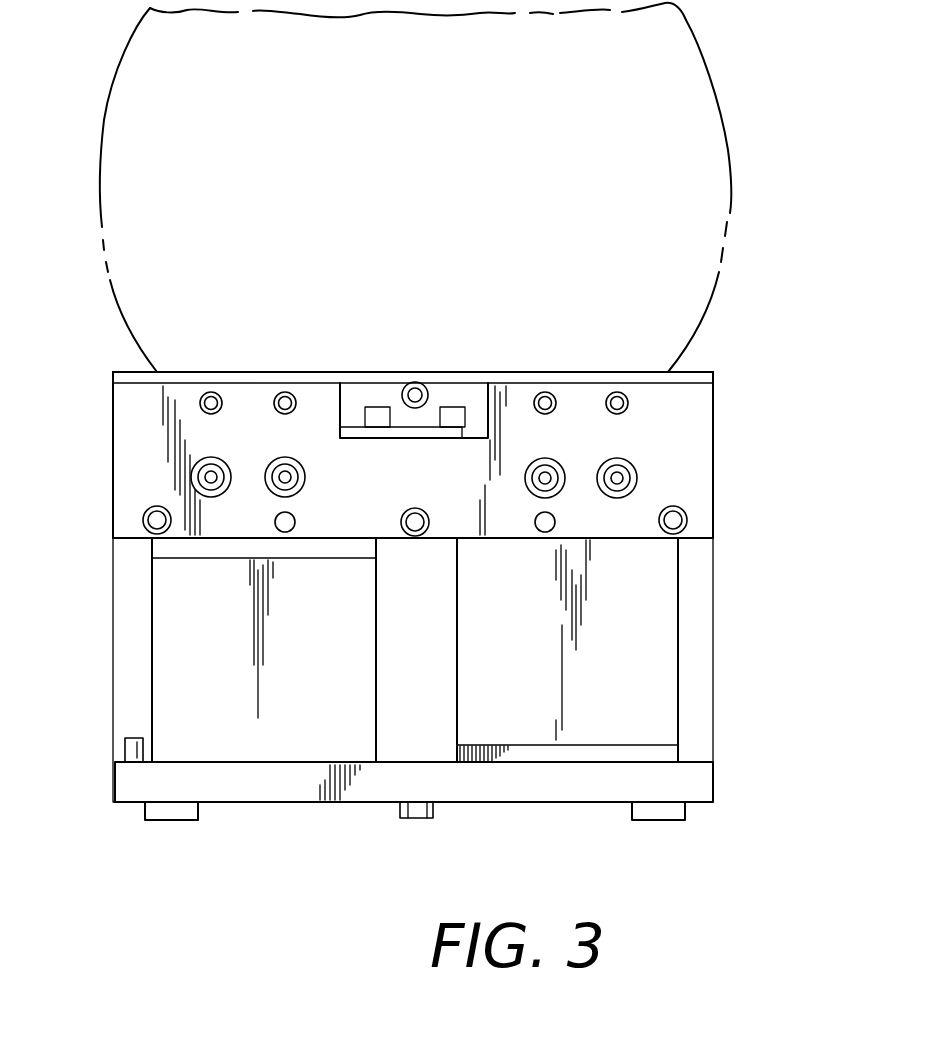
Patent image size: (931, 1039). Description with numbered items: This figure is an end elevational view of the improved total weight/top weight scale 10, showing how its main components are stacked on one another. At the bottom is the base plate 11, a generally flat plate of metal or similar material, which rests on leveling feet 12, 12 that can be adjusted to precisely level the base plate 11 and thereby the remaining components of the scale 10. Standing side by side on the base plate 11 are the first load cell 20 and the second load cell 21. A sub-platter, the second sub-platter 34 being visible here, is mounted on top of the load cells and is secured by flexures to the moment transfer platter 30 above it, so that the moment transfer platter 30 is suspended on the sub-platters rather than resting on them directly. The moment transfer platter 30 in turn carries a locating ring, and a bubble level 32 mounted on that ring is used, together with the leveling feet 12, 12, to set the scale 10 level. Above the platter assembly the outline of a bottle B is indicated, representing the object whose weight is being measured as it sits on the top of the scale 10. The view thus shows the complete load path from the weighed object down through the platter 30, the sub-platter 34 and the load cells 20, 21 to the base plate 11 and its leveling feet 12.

The bottle B is at (100, 133).
The total weight/top weight scale 10 is at (752, 414).
The base plate 11 is at (533, 790).
The leveling feet 12 is at (142, 810).
The first load cell 20 is at (680, 695).
The second load cell 21 is at (152, 572).
The moment transfer platter 30 is at (124, 372).
The bubble level 32 is at (125, 742).
The second sub-platter 34 is at (702, 503).